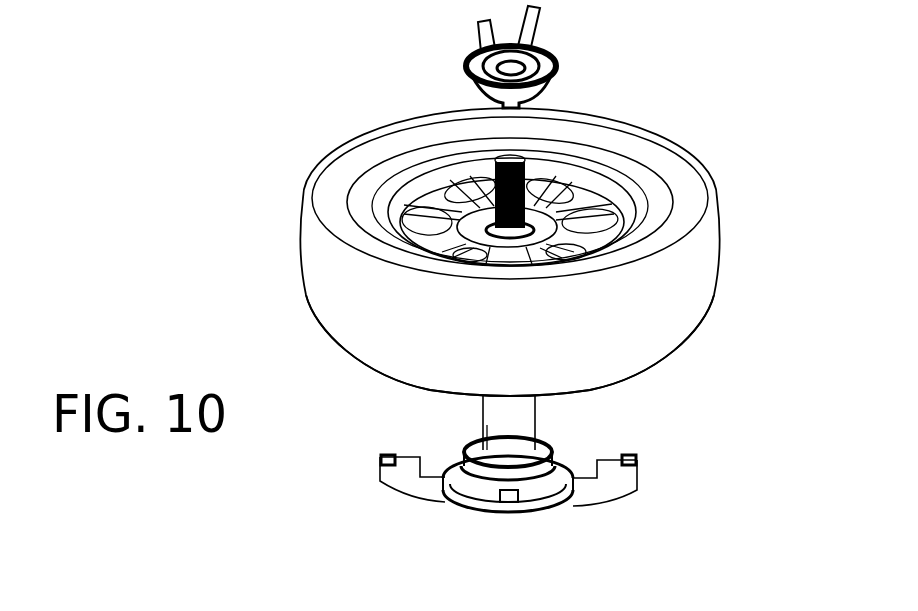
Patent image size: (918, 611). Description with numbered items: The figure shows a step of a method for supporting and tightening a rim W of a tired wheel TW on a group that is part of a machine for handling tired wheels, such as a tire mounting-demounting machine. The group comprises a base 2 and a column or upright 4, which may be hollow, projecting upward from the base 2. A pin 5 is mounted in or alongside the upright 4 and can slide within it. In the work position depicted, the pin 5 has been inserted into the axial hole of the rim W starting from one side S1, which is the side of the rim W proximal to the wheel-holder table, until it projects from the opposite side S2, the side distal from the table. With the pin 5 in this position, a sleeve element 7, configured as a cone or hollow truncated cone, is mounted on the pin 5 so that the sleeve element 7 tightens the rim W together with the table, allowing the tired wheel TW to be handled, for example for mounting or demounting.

The base 2 is at (462, 505).
The upright 4 is at (483, 427).
The pin 5 is at (492, 162).
The sleeve element 7 is at (557, 60).
The rim W is at (580, 198).
The tired wheel TW is at (698, 186).
The side of insertion S1 is at (557, 395).
The opposite side S2 is at (343, 168).